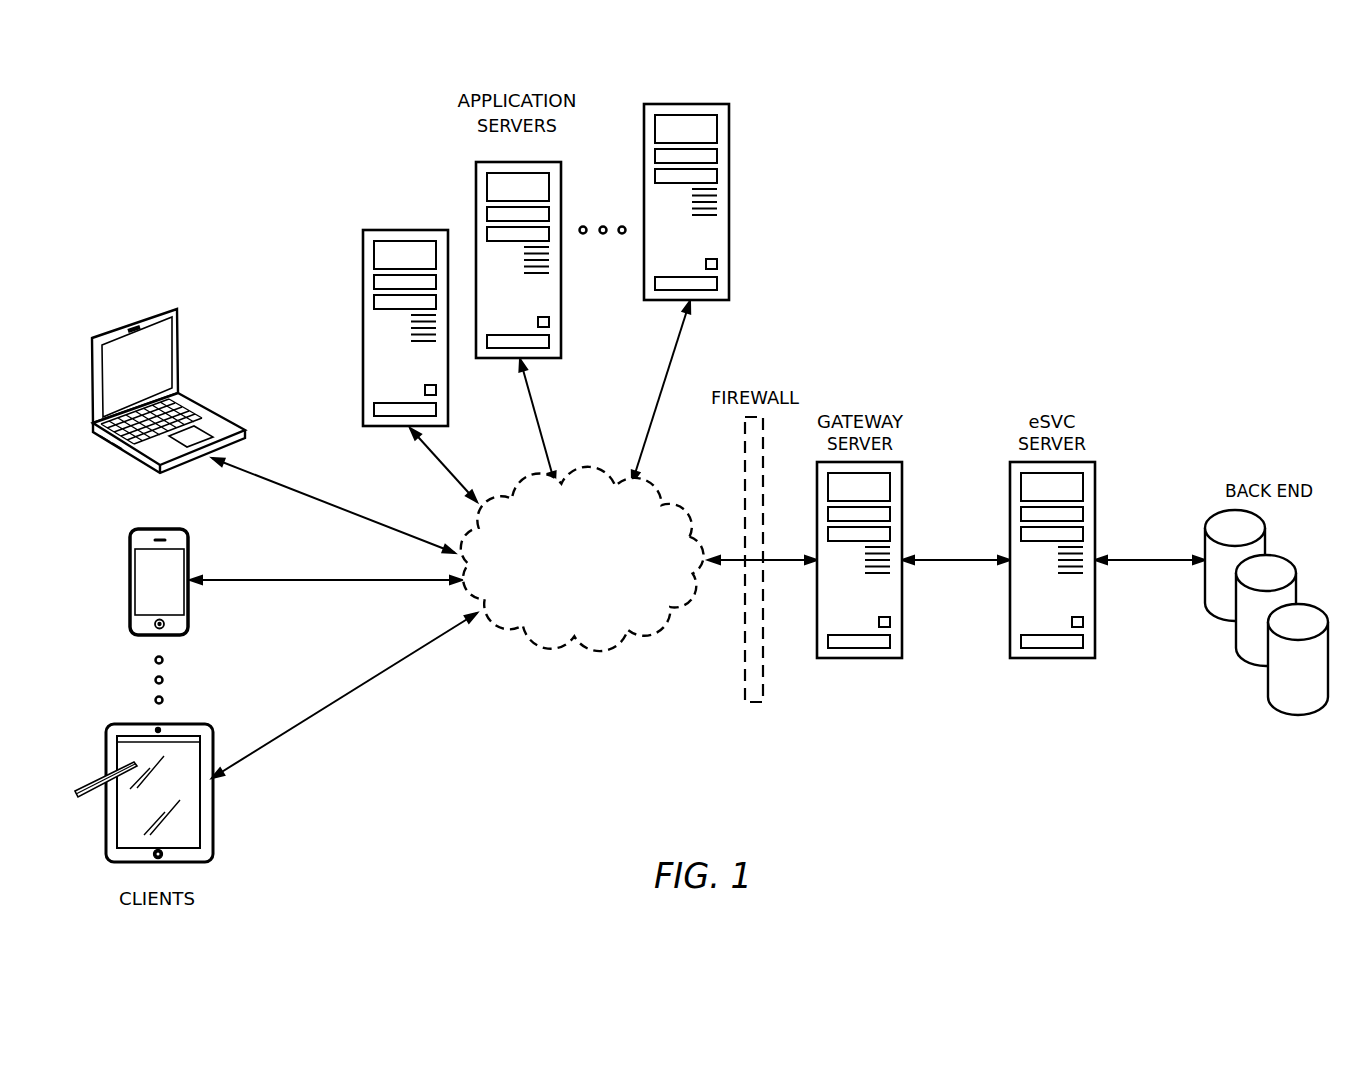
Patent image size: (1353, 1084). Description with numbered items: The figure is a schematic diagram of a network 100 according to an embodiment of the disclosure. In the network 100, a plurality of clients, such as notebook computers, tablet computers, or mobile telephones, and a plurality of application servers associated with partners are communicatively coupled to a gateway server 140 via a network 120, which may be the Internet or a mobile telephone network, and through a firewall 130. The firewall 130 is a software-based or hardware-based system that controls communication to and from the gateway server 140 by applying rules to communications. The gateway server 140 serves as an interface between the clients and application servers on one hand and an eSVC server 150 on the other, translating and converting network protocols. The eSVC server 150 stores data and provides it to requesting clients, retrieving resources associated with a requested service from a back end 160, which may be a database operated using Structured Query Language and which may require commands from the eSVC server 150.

The network 100 is at (994, 258).
The network 120 is at (567, 591).
The firewall 130 is at (754, 703).
The gateway server 140 is at (860, 658).
The eSVC server 150 is at (1048, 658).
The back end 160 is at (1270, 700).